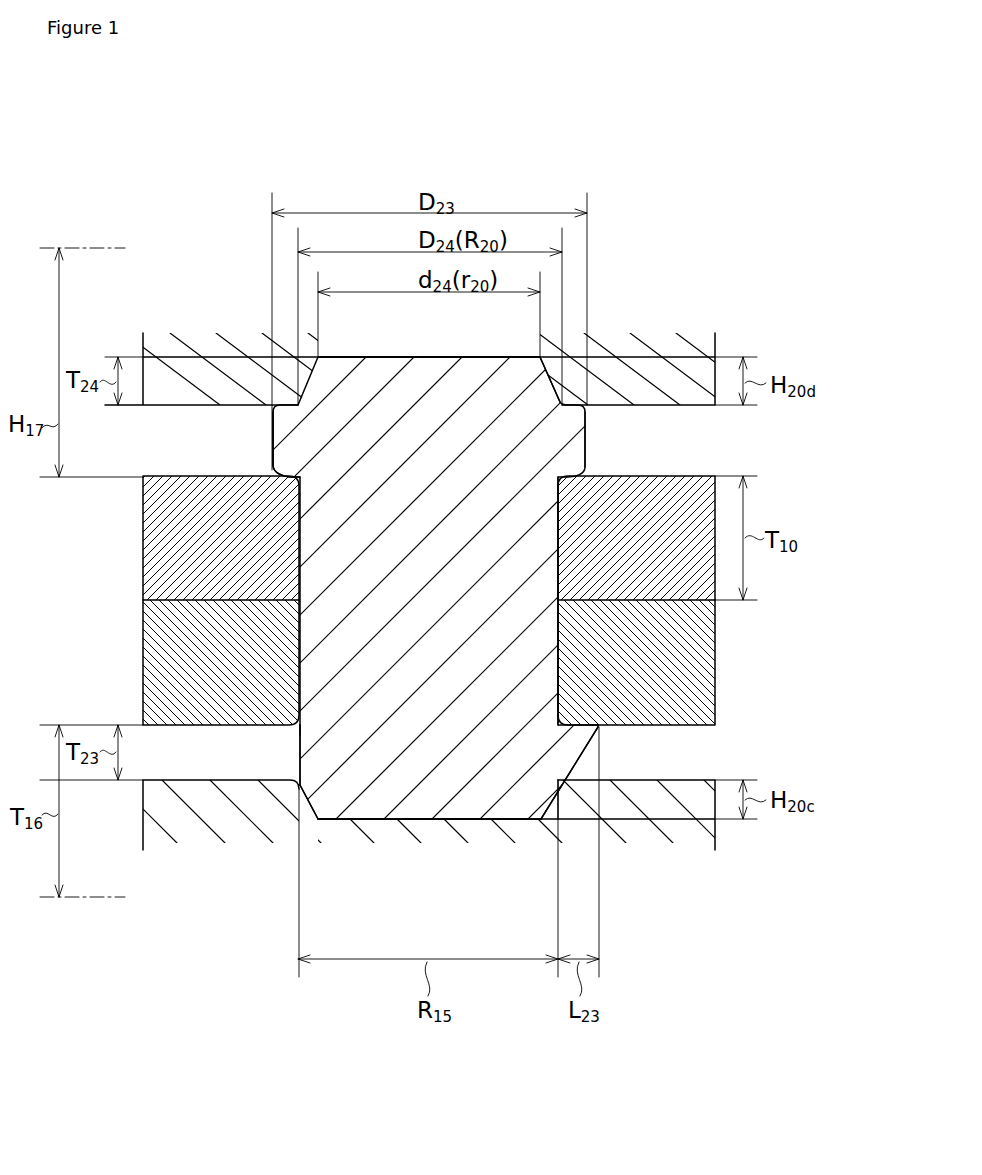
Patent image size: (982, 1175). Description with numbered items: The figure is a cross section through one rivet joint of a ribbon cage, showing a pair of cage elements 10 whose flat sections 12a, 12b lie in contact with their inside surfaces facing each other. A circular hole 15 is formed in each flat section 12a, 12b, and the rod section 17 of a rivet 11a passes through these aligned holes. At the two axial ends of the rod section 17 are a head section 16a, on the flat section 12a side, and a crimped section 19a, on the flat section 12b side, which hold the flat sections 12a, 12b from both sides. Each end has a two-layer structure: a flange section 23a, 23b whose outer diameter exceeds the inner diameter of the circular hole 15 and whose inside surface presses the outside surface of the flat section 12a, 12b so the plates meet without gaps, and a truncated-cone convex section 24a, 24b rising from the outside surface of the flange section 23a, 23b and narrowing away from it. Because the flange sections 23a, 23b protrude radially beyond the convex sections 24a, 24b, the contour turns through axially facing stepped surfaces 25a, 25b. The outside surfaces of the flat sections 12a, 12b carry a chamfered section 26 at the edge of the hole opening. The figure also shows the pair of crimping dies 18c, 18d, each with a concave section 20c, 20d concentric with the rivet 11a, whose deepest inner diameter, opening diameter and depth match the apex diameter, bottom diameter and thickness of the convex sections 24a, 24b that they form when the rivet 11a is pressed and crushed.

The cage element 10 is at (143, 529).
The rivet 11a is at (569, 801).
The flat section 12a is at (153, 671).
The flat section 12b is at (160, 567).
The circular hole 15 is at (553, 523).
The head section 16a is at (274, 752).
The rod section 17 is at (530, 648).
The die 18c is at (686, 824).
The die 18d is at (697, 346).
The crimped section 19a is at (281, 432).
The concave section 20c is at (378, 819).
The concave section 20d is at (427, 357).
The flange section 23a is at (598, 729).
The flange section 23b is at (573, 476).
The convex section 24a is at (415, 803).
The convex section 24b is at (381, 377).
The stepped surface 25a is at (316, 814).
The stepped surface 25b is at (564, 390).
The chamfered section 26 is at (292, 476).